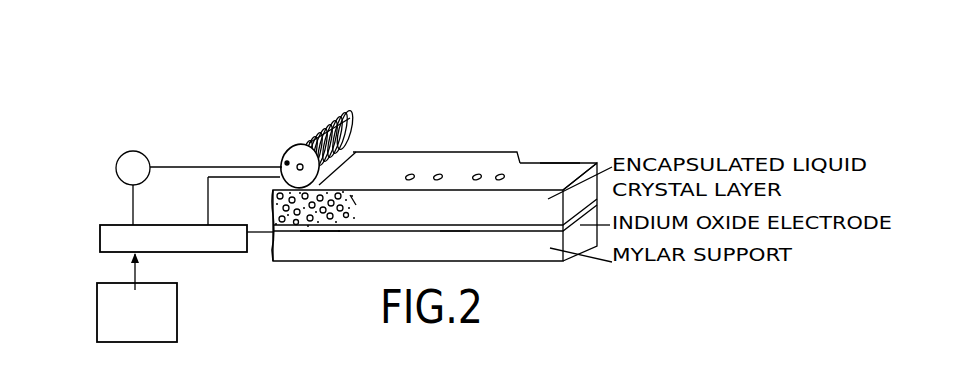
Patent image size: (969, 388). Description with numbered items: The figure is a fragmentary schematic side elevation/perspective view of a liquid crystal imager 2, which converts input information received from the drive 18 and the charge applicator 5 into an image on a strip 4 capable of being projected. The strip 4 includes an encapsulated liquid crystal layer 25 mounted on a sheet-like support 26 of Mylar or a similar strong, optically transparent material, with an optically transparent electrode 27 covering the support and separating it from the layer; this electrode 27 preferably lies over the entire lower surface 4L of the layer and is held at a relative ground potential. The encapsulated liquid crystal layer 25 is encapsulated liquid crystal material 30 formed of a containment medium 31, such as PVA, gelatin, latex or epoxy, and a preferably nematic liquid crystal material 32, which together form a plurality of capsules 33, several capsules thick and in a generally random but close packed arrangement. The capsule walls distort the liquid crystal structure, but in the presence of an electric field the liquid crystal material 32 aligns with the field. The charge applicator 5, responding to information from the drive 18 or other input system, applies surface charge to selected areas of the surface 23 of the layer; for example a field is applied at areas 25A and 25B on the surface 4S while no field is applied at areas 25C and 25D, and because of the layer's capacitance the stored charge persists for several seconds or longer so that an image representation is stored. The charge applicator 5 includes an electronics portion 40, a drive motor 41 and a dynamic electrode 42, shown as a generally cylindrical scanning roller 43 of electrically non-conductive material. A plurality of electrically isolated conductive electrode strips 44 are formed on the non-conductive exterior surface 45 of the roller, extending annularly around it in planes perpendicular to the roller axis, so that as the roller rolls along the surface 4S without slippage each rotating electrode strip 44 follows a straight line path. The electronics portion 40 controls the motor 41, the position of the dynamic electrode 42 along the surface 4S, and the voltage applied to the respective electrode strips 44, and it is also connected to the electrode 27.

The imager 2 is at (239, 120).
The strip 4 is at (408, 142).
The charge applicator 5 is at (186, 163).
The drive 18 is at (132, 343).
The surface 23 is at (588, 163).
The encapsulated liquid crystal layer 25 is at (272, 203).
The area 25A is at (407, 175).
The area 25B is at (435, 175).
The area 25C is at (476, 174).
The area 25D is at (503, 175).
The sheet-like support 26 is at (284, 252).
The optically transparent electrode 27 is at (477, 235).
The encapsulated liquid crystal material 30 is at (358, 208).
The containment medium 31 is at (318, 223).
The liquid crystal material 32 is at (338, 227).
The capsules 33 is at (296, 228).
The electronics portion 40 is at (168, 225).
The drive motor 41 is at (121, 158).
The dynamic electrode 42 is at (305, 144).
The scanning roller 43 is at (337, 120).
The electrode strips 44 is at (272, 146).
The non-conductive exterior surface 45 is at (353, 140).
The lower surface 4L is at (447, 232).
The surface 4S is at (558, 168).